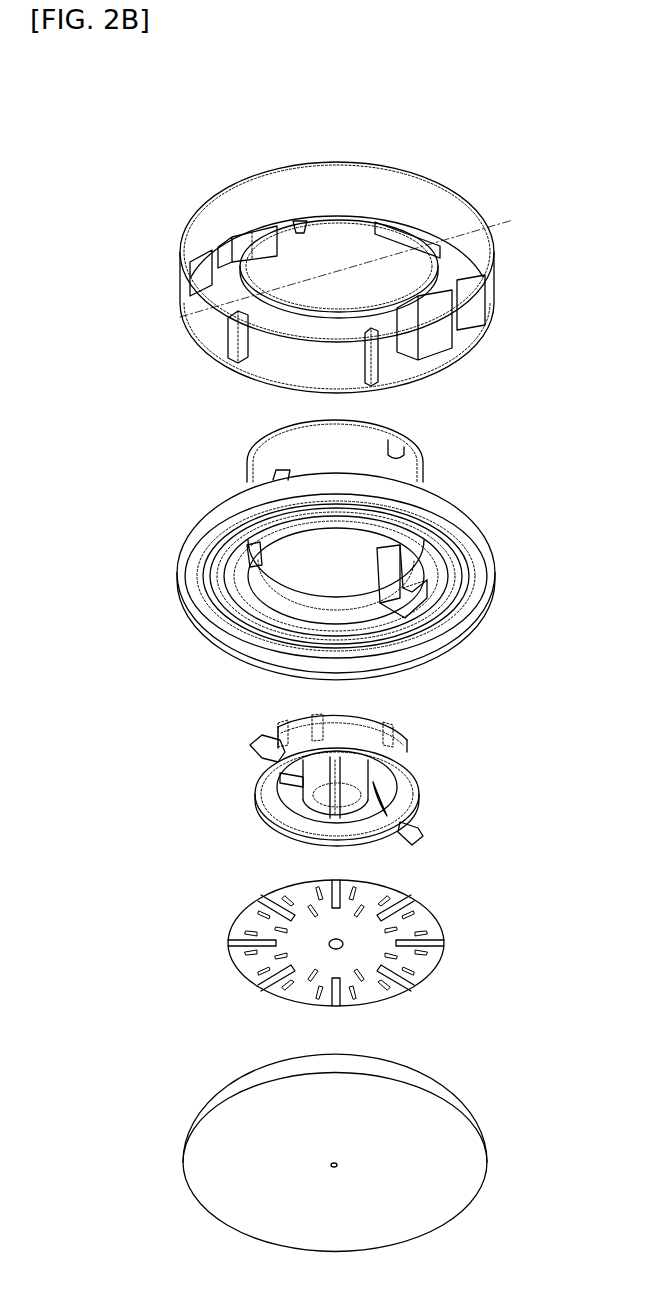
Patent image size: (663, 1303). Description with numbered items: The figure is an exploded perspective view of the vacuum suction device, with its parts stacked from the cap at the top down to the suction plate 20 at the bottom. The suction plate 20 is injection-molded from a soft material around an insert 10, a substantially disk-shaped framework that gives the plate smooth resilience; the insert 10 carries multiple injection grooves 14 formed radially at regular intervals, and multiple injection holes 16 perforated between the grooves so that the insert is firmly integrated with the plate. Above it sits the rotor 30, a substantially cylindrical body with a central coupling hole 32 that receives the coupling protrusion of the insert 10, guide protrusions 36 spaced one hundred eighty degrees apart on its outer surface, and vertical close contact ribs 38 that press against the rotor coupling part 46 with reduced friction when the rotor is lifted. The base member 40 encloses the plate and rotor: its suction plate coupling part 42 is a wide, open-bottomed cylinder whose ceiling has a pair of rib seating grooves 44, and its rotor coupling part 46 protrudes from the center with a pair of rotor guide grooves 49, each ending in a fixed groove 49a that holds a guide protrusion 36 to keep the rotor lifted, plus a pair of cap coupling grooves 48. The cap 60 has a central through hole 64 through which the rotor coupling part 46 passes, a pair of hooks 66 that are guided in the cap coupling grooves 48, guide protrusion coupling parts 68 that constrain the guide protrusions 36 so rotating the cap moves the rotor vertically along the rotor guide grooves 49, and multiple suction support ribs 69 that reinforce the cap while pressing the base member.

The insert 10 is at (218, 944).
The injection grooves 14 is at (430, 946).
The injection holes 16 is at (400, 985).
The suction plate 20 is at (174, 1160).
The rotor 30 is at (236, 780).
The coupling hole 32 is at (312, 815).
The guide protrusions 36 is at (420, 830).
The close contact ribs 38 is at (285, 722).
The base member 40 is at (174, 515).
The suction plate coupling part 42 is at (450, 508).
The rib seating grooves 44 is at (370, 655).
The rotor coupling part 46 is at (277, 455).
The cap coupling grooves 48 is at (300, 580).
The rotor guide grooves 49 is at (448, 633).
The fixed groove 49a is at (440, 650).
The cap 60 is at (186, 178).
The through hole 64 is at (400, 272).
The hooks 66 is at (245, 302).
The guide protrusion coupling parts 68 is at (413, 367).
The suction support ribs 69 is at (380, 367).